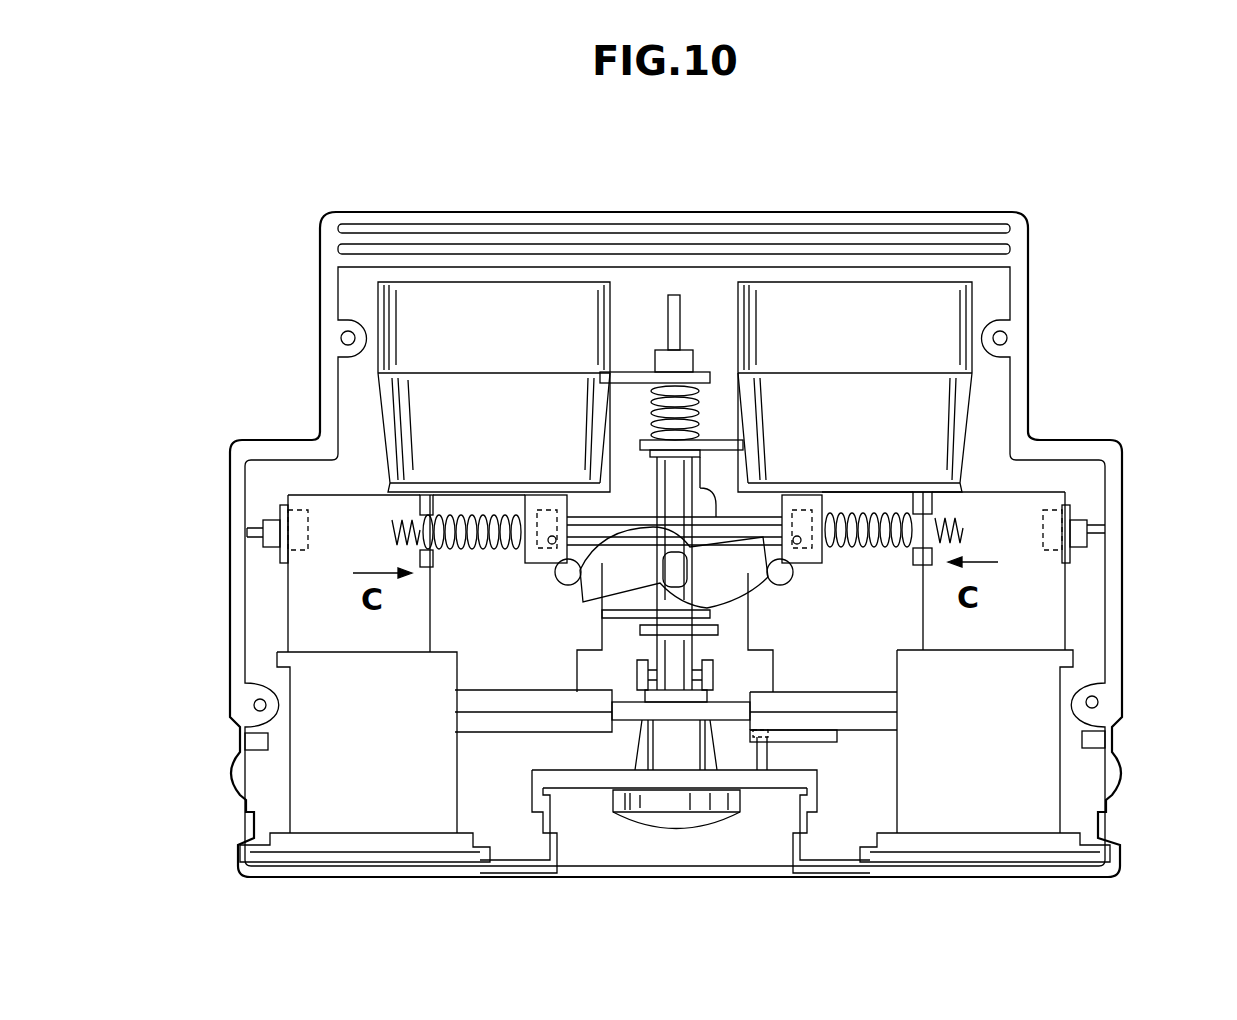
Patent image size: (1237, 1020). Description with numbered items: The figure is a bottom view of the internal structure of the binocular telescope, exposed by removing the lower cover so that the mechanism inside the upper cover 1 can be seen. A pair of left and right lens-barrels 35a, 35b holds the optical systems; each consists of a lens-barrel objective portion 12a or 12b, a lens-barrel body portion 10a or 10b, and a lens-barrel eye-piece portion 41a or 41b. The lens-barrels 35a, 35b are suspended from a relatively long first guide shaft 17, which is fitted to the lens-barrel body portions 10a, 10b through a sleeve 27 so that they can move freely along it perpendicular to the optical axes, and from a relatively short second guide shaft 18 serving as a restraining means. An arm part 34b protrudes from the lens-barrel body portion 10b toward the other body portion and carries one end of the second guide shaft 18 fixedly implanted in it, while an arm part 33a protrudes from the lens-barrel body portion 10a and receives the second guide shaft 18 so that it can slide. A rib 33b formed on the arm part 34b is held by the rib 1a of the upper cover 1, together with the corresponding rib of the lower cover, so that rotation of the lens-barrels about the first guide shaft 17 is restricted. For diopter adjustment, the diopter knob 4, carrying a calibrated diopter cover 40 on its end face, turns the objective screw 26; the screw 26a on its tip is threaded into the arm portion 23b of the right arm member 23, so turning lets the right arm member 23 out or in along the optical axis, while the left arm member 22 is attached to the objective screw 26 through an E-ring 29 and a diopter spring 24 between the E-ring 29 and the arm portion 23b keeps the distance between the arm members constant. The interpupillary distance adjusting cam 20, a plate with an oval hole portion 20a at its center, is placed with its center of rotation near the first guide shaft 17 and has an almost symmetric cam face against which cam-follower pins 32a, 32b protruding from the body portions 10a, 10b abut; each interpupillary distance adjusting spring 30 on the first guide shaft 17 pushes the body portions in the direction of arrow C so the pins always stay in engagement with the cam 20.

The upper cover 1 is at (757, 218).
The rib 1a is at (767, 755).
The diopter knob 4 is at (667, 753).
The lens-barrel body portion 10a is at (305, 680).
The lens-barrel body portion 10b is at (1025, 623).
The lens-barrel objective portion 12a is at (405, 413).
The lens-barrel objective portion 12b is at (937, 315).
The first guide shaft 17 is at (1093, 528).
The second guide shaft 18 is at (733, 712).
The interpupillary distance adjusting cam 20 is at (747, 563).
The hole portion 20a is at (680, 568).
The left arm member 22 is at (760, 512).
The right arm member 23 is at (607, 443).
The arm portion 23b is at (650, 383).
The diopter spring 24 is at (640, 393).
The objective screw 26 is at (674, 296).
The screw 26a is at (694, 354).
The sleeve 27 is at (262, 548).
The E-ring 29 is at (723, 478).
The interpupillary distance adjusting spring 30 is at (392, 533).
The cam-follower pin 32a is at (563, 578).
The cam-follower pin 32b is at (782, 575).
The arm part 33a is at (518, 703).
The rib 33b is at (825, 740).
The arm part 34b is at (875, 710).
The lens-barrel 35a is at (300, 500).
The lens-barrel 35b is at (1032, 582).
The calibrated diopter cover 40 is at (683, 822).
The lens-barrel eye-piece portion 41a is at (290, 855).
The lens-barrel eye-piece portion 41b is at (1060, 850).